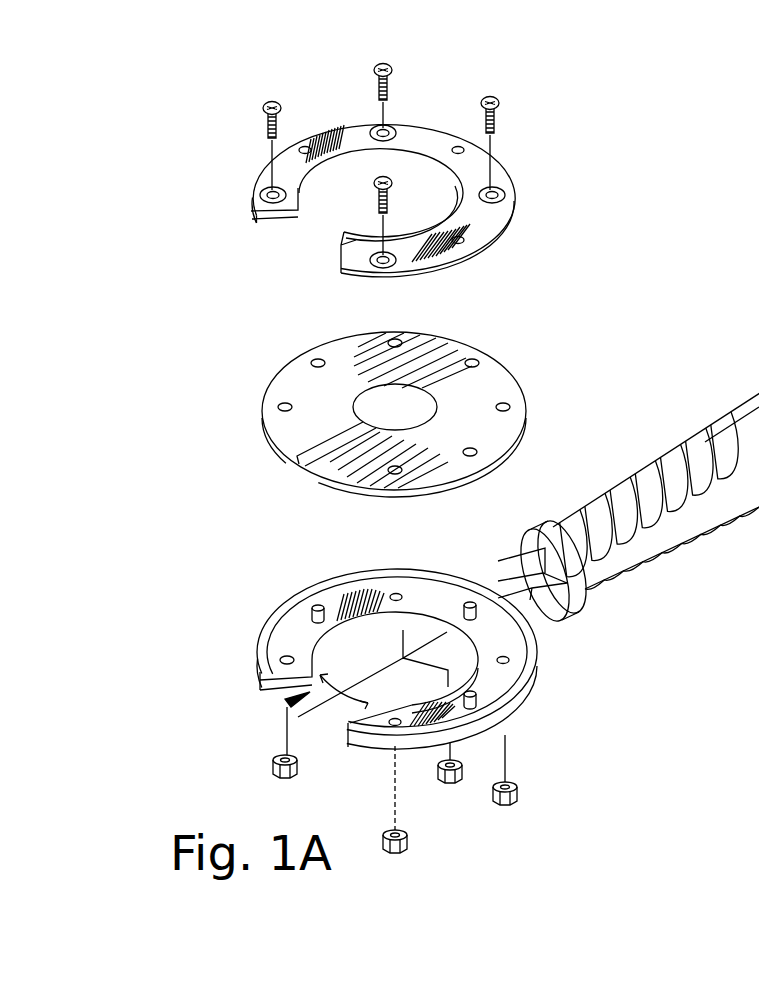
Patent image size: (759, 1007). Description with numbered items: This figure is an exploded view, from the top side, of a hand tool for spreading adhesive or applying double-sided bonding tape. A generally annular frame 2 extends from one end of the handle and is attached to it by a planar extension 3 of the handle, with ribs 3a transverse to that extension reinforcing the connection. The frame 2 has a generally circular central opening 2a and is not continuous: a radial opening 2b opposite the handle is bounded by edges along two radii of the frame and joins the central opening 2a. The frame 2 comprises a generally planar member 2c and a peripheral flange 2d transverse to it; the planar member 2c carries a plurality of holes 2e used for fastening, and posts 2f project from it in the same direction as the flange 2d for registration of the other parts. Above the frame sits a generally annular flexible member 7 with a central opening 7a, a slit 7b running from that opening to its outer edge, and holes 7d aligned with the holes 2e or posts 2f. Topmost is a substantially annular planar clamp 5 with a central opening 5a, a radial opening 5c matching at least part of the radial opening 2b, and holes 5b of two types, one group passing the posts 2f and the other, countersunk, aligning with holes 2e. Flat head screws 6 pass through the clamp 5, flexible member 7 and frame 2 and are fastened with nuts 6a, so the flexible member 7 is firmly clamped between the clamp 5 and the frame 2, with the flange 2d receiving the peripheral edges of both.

The frame 2 is at (493, 682).
The central opening 2a is at (403, 657).
The radial opening 2b is at (287, 702).
The planar member 2c is at (305, 623).
The peripheral flange 2d is at (398, 568).
The holes 2e is at (287, 657).
The posts 2f is at (476, 700).
The planar extension 3 is at (538, 588).
The ribs 3a is at (525, 560).
The clamp 5 is at (430, 128).
The central opening 5a is at (360, 178).
The holes 5b is at (458, 243).
The radial opening 5c is at (323, 240).
The flat head screw 6 is at (497, 122).
The nuts 6a is at (408, 845).
The flexible member 7 is at (490, 385).
The central opening 7a is at (395, 400).
The slit 7b is at (330, 425).
The holes 7d is at (505, 410).